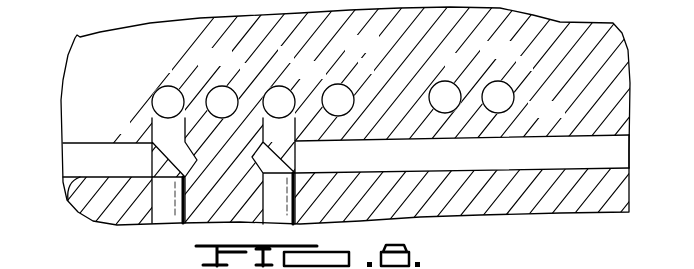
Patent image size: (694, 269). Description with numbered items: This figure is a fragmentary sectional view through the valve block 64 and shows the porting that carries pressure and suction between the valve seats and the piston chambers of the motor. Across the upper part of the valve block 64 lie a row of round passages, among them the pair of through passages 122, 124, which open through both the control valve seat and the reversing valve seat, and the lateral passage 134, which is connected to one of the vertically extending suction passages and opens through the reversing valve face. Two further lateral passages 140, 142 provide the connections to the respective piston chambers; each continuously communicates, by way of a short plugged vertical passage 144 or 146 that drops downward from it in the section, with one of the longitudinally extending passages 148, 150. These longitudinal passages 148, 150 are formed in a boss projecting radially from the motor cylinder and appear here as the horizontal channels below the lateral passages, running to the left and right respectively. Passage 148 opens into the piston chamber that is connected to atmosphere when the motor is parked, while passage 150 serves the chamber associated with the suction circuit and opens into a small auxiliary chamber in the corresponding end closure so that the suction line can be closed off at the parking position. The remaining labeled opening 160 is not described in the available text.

The valve block 64 is at (630, 70).
The through passage 122 is at (341, 86).
The through passage 124 is at (224, 93).
The lateral passage 134 is at (460, 91).
The lateral passage 140 is at (162, 88).
The lateral passage 142 is at (291, 87).
The plugged vertical passage 144 is at (152, 124).
The plugged vertical passage 146 is at (286, 121).
The longitudinally extending passage 148 is at (70, 198).
The longitudinally extending passage 150 is at (631, 147).
The passage a 160 is at (511, 105).